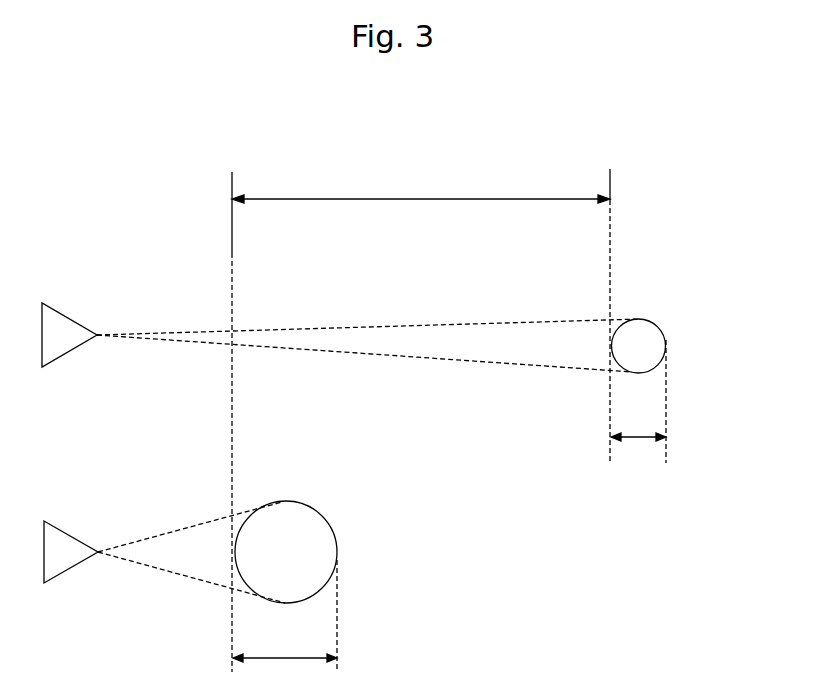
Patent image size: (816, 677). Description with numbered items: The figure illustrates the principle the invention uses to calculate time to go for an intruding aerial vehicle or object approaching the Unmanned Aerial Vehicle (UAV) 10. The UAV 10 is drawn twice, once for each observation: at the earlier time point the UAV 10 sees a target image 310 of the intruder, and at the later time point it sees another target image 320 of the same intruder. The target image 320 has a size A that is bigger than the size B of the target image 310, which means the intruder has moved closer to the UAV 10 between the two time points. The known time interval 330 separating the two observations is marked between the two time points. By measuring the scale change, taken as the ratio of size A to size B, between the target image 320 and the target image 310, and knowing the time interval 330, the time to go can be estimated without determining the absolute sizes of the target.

The Unmanned Aerial Vehicle (UAV) 10 is at (68, 314).
The target image 310 is at (657, 370).
The target image 320 is at (338, 562).
The time interval delta T 330 is at (418, 145).